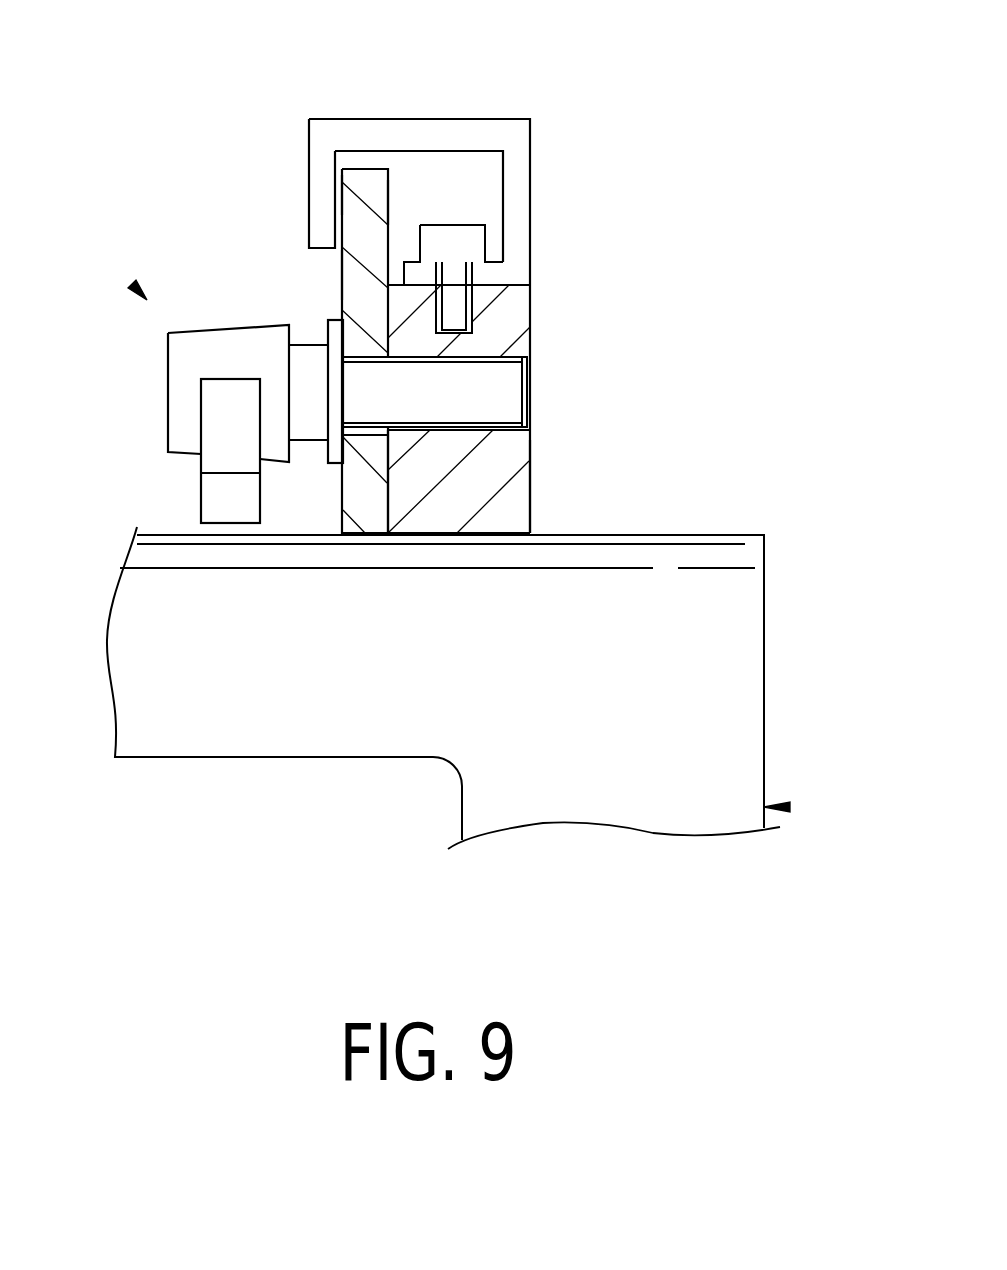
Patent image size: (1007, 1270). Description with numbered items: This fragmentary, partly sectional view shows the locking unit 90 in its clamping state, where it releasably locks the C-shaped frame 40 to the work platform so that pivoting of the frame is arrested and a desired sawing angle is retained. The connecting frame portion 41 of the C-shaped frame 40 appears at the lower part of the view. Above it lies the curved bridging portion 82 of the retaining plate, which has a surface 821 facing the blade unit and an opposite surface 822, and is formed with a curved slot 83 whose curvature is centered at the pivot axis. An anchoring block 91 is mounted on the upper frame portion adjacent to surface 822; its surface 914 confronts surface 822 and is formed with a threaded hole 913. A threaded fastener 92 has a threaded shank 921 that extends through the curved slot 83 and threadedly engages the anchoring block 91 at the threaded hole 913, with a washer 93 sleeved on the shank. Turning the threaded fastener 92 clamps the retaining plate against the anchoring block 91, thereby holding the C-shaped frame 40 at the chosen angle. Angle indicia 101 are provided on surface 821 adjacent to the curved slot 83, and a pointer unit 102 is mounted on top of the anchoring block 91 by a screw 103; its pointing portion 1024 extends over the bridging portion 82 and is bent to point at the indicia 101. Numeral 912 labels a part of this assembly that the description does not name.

The C-shaped frame 40 is at (786, 807).
The connecting frame portion 41 is at (760, 730).
The bridging portion 82 is at (372, 177).
The surface 821 is at (355, 195).
The surface 822 is at (388, 202).
The curved slot 83 is at (372, 435).
The locking unit 90 is at (140, 292).
The anchoring block 91 is at (522, 432).
The fastening bolt 912 is at (457, 317).
The threaded hole 913 is at (475, 410).
The surface 914 is at (388, 500).
The threaded fastener 92 is at (168, 360).
The threaded shank 921 is at (524, 468).
The washer 93 is at (335, 453).
The angle indicia 101 is at (343, 273).
The pointer unit 102 is at (530, 178).
The pointing portion 1024 is at (317, 200).
The screw 103 is at (500, 318).